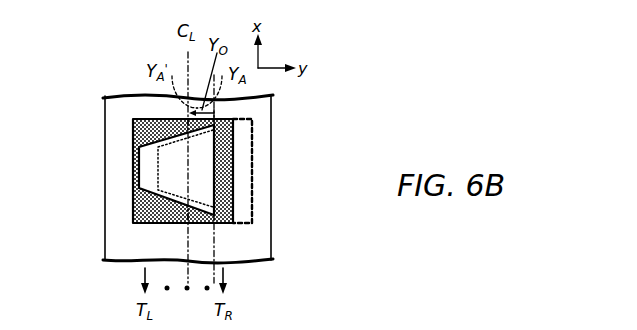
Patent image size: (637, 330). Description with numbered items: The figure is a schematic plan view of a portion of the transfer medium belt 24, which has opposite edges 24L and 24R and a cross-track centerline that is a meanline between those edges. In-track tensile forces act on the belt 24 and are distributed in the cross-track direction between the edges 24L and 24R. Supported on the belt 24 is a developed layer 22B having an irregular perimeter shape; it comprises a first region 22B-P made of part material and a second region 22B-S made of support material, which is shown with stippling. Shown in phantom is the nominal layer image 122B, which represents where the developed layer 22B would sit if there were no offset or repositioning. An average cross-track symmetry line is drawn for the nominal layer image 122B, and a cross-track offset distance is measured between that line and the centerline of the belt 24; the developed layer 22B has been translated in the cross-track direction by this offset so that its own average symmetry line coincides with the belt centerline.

The transfer medium belt 24 is at (235, 176).
The left edge of transfer medium belt 24L is at (103, 113).
The right edge of transfer medium belt 24R is at (272, 148).
The developed layer 22B is at (126, 172).
The first region of part material 22B-P is at (140, 147).
The second region of support material 22B-S is at (148, 210).
The nominal layer image 122B is at (218, 207).